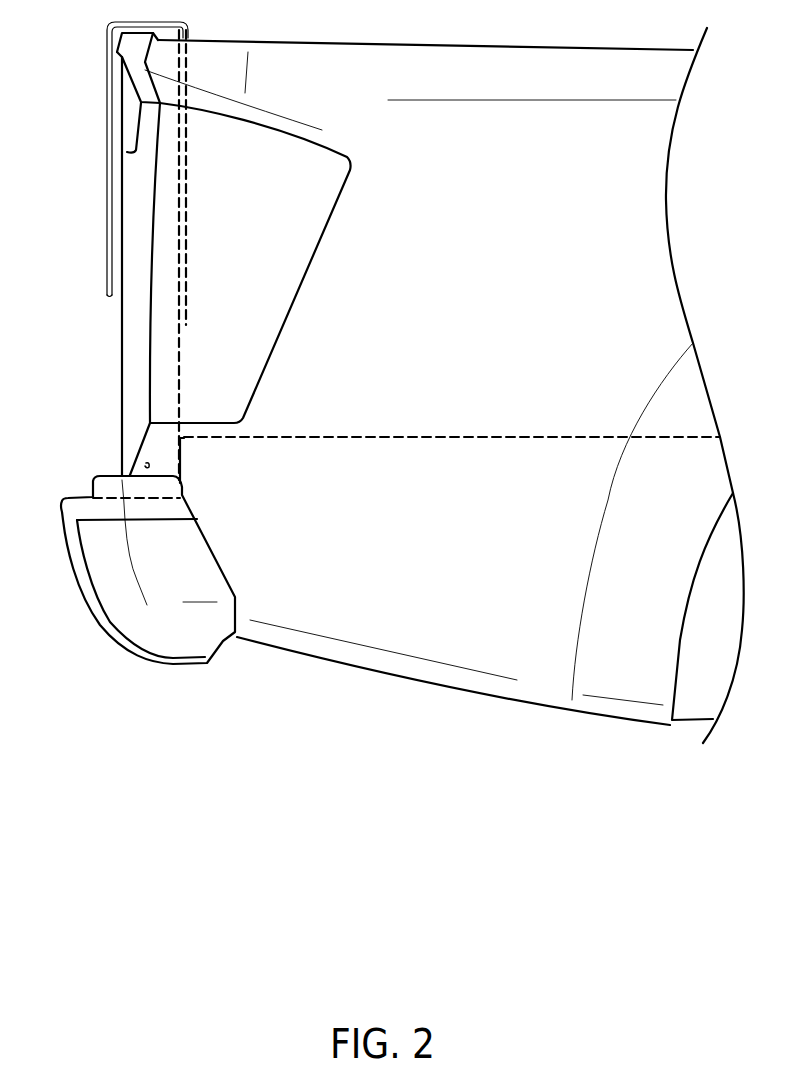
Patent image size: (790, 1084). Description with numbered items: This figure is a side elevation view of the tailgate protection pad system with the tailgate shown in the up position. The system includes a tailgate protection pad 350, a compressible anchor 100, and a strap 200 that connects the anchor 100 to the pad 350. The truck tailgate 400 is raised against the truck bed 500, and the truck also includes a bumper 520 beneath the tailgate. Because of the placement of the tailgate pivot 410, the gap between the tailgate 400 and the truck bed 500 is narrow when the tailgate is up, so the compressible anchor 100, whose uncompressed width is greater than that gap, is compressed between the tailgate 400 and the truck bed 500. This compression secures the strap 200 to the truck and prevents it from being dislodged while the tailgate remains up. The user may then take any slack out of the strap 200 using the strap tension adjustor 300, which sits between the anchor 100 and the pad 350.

The compressible anchor 100 is at (182, 462).
The strap 200 is at (180, 362).
The strap tension adjustor 300 is at (186, 290).
The tailgate protection pad 350 is at (105, 173).
The truck tailgate 400 is at (130, 328).
The tailgate pivot 410 is at (145, 466).
The truck bed 500 is at (453, 437).
The bumper 520 is at (191, 576).